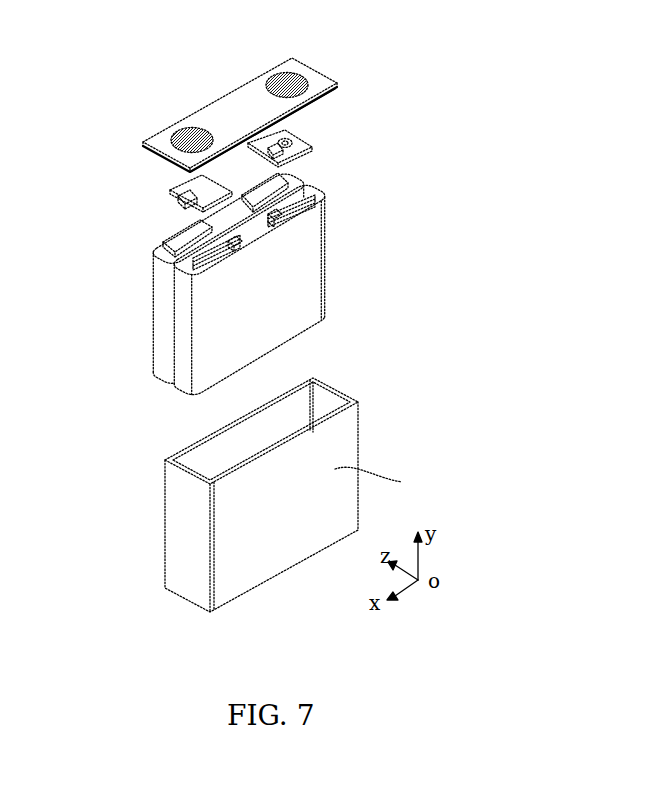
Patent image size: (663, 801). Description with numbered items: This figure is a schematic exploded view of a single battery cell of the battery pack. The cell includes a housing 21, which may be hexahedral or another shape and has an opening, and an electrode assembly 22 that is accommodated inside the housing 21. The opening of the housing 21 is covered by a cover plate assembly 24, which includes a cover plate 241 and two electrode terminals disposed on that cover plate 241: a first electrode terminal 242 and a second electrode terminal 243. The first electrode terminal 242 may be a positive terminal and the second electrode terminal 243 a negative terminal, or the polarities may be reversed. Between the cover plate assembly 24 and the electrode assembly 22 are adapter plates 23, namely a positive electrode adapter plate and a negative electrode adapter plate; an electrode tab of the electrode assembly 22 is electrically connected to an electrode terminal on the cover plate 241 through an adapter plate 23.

The housing 21 is at (299, 495).
The electrode assembly 22 is at (185, 333).
The adapter plate 23 is at (308, 148).
The cover plate assembly 24 is at (317, 73).
The cover plate 241 is at (330, 83).
The first electrode terminal 242 is at (180, 128).
The second electrode terminal 243 is at (288, 72).